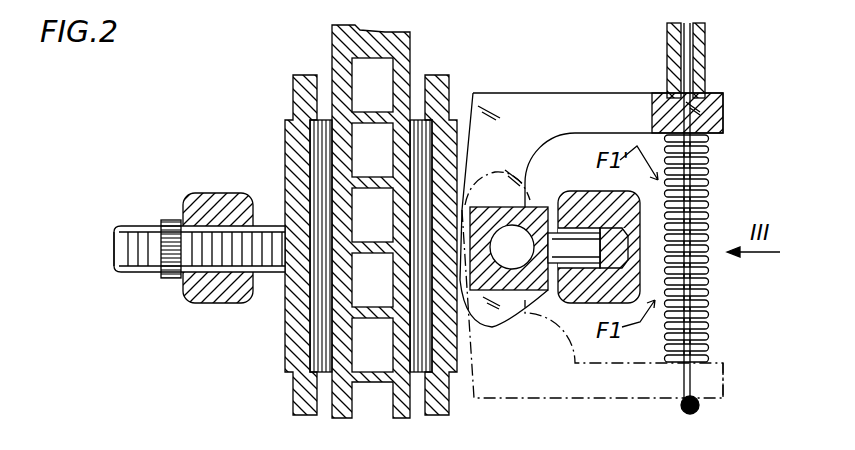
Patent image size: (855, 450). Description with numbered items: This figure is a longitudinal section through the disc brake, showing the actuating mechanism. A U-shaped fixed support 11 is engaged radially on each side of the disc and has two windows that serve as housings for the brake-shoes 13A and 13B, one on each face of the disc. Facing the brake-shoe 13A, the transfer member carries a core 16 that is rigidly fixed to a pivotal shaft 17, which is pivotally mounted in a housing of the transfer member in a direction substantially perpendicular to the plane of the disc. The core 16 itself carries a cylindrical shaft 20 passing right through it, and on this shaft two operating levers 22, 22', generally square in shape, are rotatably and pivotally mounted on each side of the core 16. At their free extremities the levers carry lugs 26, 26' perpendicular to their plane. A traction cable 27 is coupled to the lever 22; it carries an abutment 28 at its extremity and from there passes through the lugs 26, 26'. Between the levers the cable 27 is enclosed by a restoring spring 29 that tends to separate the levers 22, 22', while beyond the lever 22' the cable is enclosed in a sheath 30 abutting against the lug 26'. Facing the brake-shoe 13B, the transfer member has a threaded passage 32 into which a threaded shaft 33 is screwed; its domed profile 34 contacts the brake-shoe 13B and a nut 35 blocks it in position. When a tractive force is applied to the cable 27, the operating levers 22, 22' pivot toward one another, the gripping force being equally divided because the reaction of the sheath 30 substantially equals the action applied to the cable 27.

The fixed support 11 is at (290, 75).
The brake-shoe 13A is at (453, 185).
The brake-shoe 13B is at (286, 134).
The core 16 is at (534, 292).
The pivotal shaft 17 is at (585, 240).
The cylindrical shaft 20 is at (522, 232).
The operating lever 22 is at (592, 303).
The operating lever 22' is at (591, 194).
The lug 26 is at (747, 399).
The lug 26' is at (712, 98).
The traction cable 27 is at (690, 312).
The abutment 28 is at (684, 410).
The restoring spring 29 is at (703, 208).
The sheath 30 is at (705, 42).
The threaded passage 32 is at (200, 206).
The threaded shaft 33 is at (122, 271).
The domed profile 34 is at (278, 228).
The nut 35 is at (166, 222).